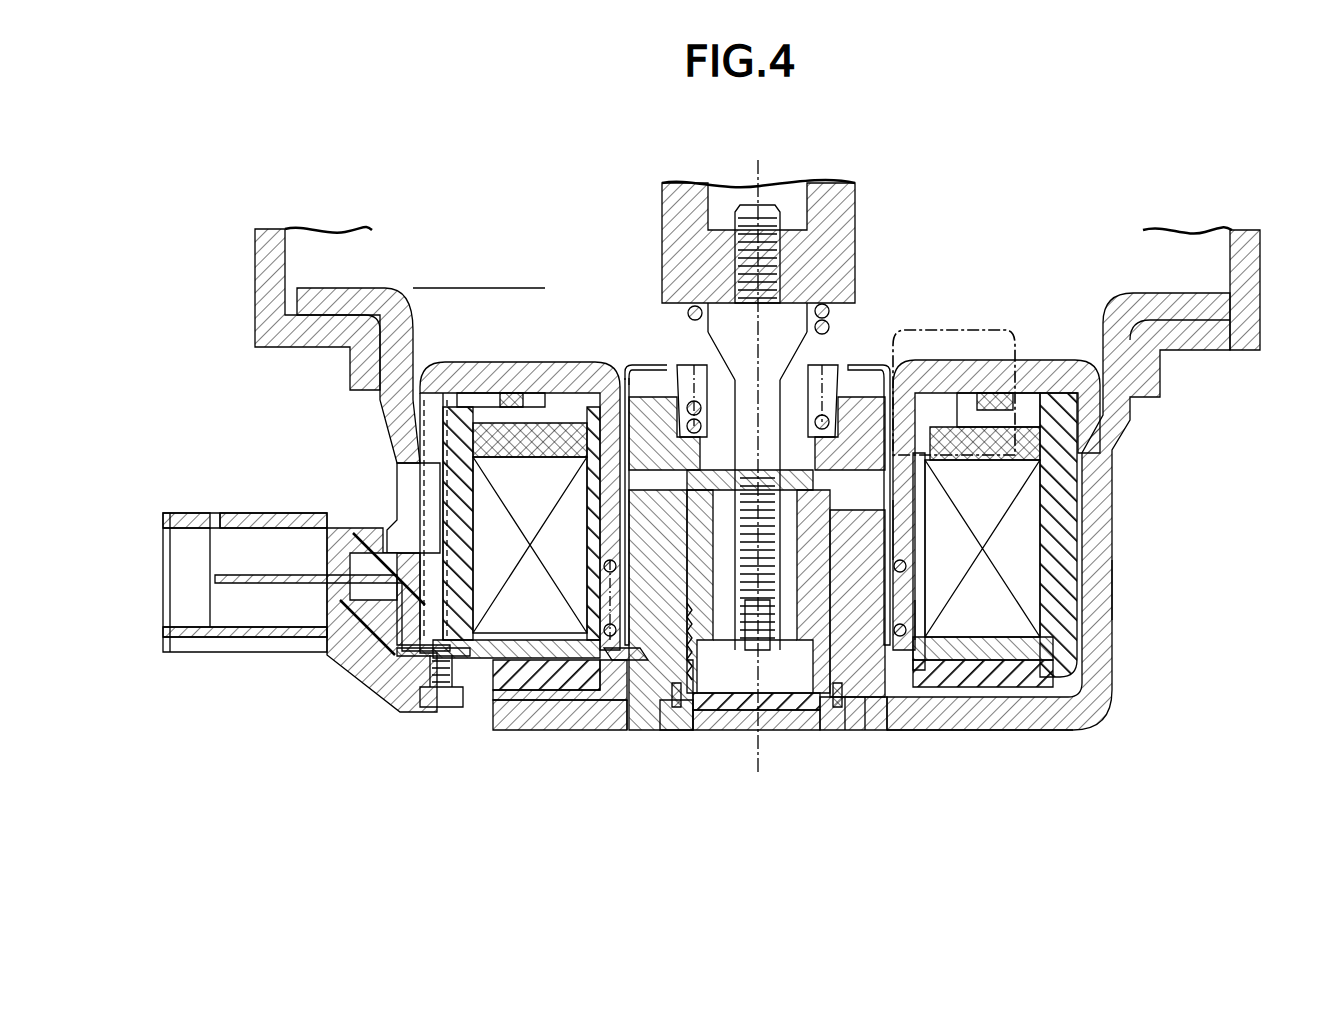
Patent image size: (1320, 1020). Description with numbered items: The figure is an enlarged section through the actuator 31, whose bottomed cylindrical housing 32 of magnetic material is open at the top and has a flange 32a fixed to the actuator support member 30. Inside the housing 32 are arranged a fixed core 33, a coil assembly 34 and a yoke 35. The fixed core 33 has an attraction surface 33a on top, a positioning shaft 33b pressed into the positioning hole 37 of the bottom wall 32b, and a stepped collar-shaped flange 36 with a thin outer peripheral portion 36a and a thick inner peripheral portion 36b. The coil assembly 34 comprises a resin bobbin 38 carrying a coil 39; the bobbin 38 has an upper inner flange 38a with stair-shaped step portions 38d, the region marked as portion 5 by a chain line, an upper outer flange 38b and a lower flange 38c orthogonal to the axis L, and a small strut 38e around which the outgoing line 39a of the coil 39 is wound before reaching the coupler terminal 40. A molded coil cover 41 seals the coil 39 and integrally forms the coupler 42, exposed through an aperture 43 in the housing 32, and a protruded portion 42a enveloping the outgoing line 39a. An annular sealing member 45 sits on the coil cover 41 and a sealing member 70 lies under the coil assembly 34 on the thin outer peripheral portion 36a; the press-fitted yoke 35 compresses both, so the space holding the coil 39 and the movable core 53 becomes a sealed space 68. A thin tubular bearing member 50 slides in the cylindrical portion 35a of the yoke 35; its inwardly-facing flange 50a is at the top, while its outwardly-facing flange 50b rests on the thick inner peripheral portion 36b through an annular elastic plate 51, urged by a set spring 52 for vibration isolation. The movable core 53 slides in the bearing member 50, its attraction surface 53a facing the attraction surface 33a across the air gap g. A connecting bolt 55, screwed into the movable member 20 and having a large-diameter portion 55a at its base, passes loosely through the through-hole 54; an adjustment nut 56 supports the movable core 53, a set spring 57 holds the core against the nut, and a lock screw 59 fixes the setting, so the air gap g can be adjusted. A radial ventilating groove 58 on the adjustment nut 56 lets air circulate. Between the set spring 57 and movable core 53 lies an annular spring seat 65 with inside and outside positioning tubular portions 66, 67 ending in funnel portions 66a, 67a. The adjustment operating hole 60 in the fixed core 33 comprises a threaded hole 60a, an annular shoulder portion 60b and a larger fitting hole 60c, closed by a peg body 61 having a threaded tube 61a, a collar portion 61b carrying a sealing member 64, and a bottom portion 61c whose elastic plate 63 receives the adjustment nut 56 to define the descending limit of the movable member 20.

The movable member 20 is at (836, 209).
The actuator support member 30 is at (262, 252).
The flange 32a is at (1181, 300).
The housing 32 is at (1118, 495).
The actuator 31 is at (1112, 585).
The bottom wall 32b is at (893, 735).
The axis L is at (762, 176).
The connecting bolt 55 is at (790, 370).
The large-diameter portion 55a is at (714, 315).
The funnel portion 66a is at (790, 376).
The inside positioning tubular portion 66 is at (795, 432).
The lock screw 59 is at (770, 648).
The set spring 57 is at (832, 324).
The funnel portion 67a is at (688, 400).
The inwardly-facing flange 50a is at (632, 366).
The bearing member 50 is at (624, 382).
The movable core 53 is at (890, 372).
The detail region 5 is at (980, 326).
The coil assembly 34 is at (487, 420).
The coil cover 41 is at (460, 397).
The annular sealing member 45 is at (512, 393).
The coil 39 is at (535, 597).
The stair-shaped step portion 38d is at (500, 455).
The bobbin 38 is at (584, 511).
The outwardly-facing flange 50b is at (572, 648).
The set spring 52 is at (604, 562).
The sealing member 64 is at (640, 652).
The annular elastic plate 51 is at (636, 690).
The thick inner peripheral portion 36b is at (612, 700).
The thin outer peripheral portion 36a is at (548, 705).
The flange 36 is at (513, 779).
The small strut 38e is at (440, 708).
The outgoing line 39a is at (420, 665).
The aperture 43 is at (398, 470).
The protruded portion 42a is at (373, 690).
The coupler 42 is at (242, 528).
The coupler terminal 40 is at (241, 586).
The annular spring seat 65 is at (692, 447).
The through-hole 54 is at (800, 456).
The radial ventilating groove 58 is at (695, 478).
The threaded hole 60a is at (700, 562).
The adjustment nut 56 is at (664, 615).
The sealed space 68 is at (804, 559).
The attraction surface 53a is at (836, 524).
The annular shoulder portion 60b is at (715, 680).
The bottom portion 61c is at (688, 735).
The collar portion 61b is at (845, 690).
The fitting hole 60c is at (673, 720).
The peg body 61 is at (741, 740).
The elastic plate 63 is at (775, 729).
The adjustment operating hole 60 is at (834, 740).
The positioning shaft 33b is at (860, 735).
The positioning hole 37 is at (870, 731).
The yoke 35 is at (1045, 368).
The upper inner flange 38a is at (965, 400).
The upper outer flange 38b is at (990, 393).
The cylindrical portion 35a is at (926, 470).
The outside positioning tubular portion 67 is at (985, 443).
The fixed core 33 is at (910, 582).
The threaded tube 61a is at (912, 525).
The air gap g is at (907, 560).
The attraction surface 33a is at (940, 620).
The lower flange 38c is at (1030, 662).
The sealing member 70 is at (1000, 665).